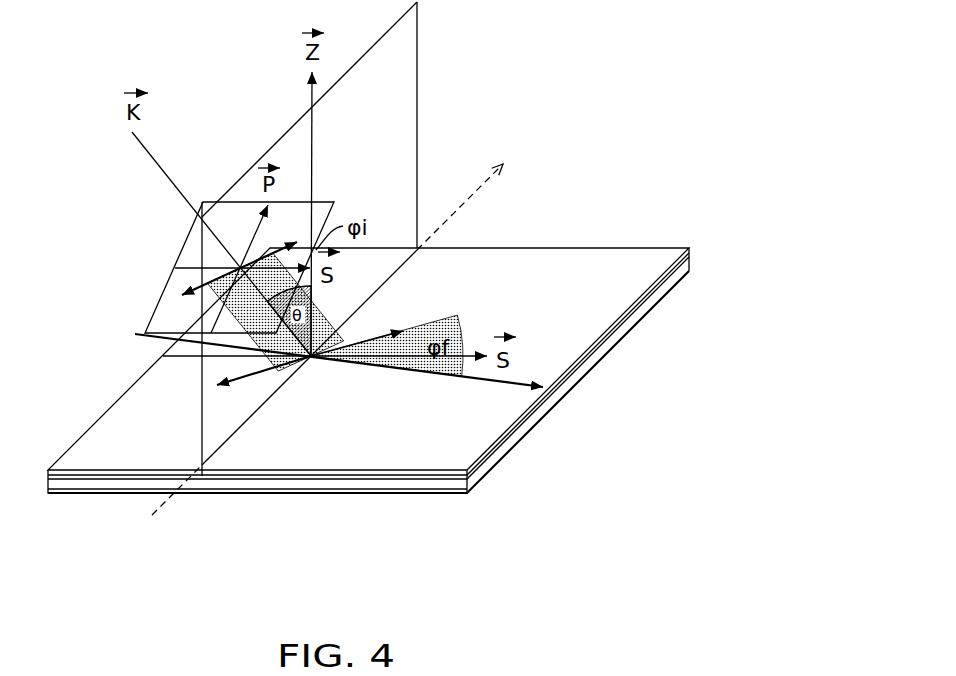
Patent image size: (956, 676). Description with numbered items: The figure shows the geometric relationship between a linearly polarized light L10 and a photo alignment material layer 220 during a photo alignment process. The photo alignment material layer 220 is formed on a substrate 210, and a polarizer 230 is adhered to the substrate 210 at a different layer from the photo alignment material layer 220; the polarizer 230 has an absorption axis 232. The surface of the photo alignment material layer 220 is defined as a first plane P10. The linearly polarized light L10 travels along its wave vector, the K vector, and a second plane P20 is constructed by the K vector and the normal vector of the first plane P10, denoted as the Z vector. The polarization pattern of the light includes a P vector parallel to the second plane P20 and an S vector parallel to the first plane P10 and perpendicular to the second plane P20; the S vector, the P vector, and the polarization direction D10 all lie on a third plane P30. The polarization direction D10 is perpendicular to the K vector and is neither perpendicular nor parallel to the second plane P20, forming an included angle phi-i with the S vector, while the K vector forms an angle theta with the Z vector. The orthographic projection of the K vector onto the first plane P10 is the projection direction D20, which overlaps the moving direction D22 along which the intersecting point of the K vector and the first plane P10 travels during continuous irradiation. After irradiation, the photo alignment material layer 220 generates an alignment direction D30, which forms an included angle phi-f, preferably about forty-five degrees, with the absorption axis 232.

The first plane P10 is at (638, 264).
The second plane P20 is at (400, 79).
The third plane P30 is at (157, 311).
The linearly polarized light L10 is at (155, 155).
The polarization direction D10 is at (193, 288).
The projection direction D20 is at (485, 180).
The moving direction D22 is at (450, 218).
The alignment direction D30 is at (372, 340).
The substrate 210 is at (407, 485).
The photo alignment material layer 220 is at (450, 476).
The polarizer 230 is at (330, 497).
The absorption axis 232 is at (497, 390).